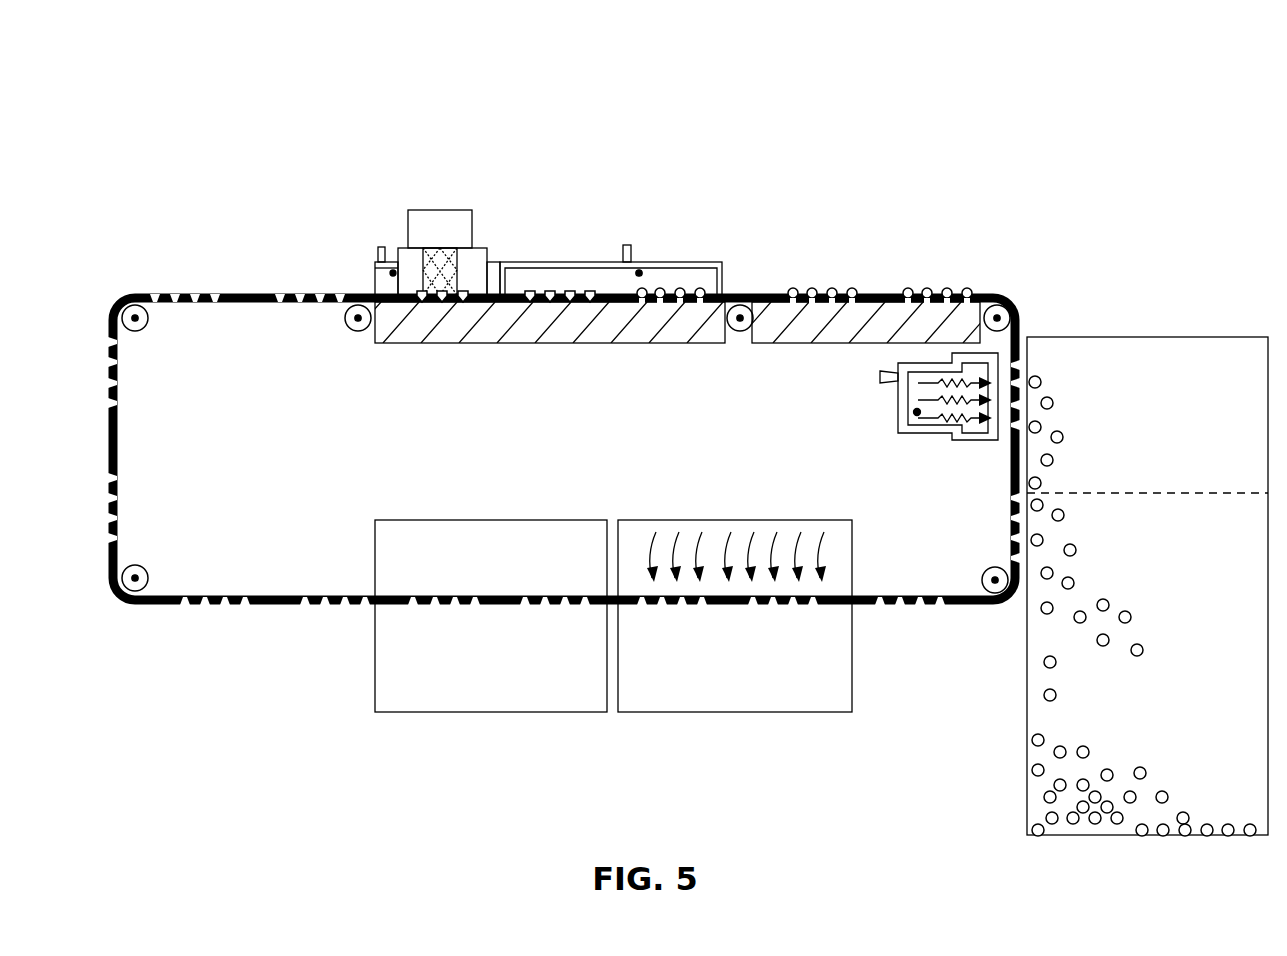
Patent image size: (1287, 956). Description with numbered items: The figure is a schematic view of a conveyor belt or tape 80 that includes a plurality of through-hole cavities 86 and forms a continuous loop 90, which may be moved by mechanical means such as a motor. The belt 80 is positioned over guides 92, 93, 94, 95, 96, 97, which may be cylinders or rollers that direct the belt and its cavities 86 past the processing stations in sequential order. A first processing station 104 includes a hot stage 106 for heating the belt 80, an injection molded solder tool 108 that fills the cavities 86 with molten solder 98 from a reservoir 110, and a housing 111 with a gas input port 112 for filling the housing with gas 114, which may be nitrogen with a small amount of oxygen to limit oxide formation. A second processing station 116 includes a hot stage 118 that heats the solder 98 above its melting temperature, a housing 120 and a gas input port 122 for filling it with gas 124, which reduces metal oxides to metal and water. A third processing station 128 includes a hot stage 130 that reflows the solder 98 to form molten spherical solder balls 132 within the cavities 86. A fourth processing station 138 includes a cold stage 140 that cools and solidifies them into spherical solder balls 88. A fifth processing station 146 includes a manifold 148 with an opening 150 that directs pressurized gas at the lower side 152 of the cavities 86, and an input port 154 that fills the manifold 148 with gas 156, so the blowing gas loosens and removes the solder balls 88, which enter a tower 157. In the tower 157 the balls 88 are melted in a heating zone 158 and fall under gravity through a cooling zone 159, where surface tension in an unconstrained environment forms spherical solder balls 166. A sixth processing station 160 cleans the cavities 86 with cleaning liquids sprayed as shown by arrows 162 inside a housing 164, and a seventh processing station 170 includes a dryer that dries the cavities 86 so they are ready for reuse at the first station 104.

The conveyor belt or tape 80 is at (240, 293).
The through-hole cavities 86 is at (215, 293).
The spherical solder balls 88 is at (793, 290).
The continuous loop 90 is at (166, 207).
The guide 92 is at (130, 332).
The guide 93 is at (350, 330).
The guide 94 is at (738, 333).
The guide 95 is at (997, 305).
The guide 96 is at (988, 580).
The guide 97 is at (140, 565).
The molten solder 98 is at (590, 292).
The first processing station 104 is at (395, 113).
The hot stage 106 is at (415, 345).
The injection molded solder tool 108 is at (462, 210).
The reservoir 110 is at (443, 210).
The housing 111 is at (384, 247).
The gas input port 112 is at (396, 262).
The gas 114 is at (376, 268).
The second processing station 116 is at (523, 113).
The hot stage 118 is at (555, 345).
The housing 120 is at (608, 262).
The gas input port 122 is at (627, 245).
The gas 124 is at (642, 268).
The third processing station 128 is at (643, 113).
The hot stage 130 is at (675, 345).
The molten spherical solder balls 132 is at (642, 290).
The fourth processing station 138 is at (835, 113).
The cold stage 140 is at (820, 345).
The fifth processing station 146 is at (1044, 349).
The manifold 148 is at (930, 437).
The opening 150 is at (993, 427).
The lower side 152 is at (1008, 400).
The input port 154 is at (880, 378).
The gas 156 is at (915, 413).
The tower 157 is at (1178, 337).
The heating zone 158 is at (1190, 378).
The cooling zone 159 is at (1190, 578).
The sixth processing station 160 is at (650, 724).
The arrows 162 is at (797, 532).
The housing 164 is at (852, 560).
The spherical solder balls 166 is at (1071, 580).
The seventh processing station 170 is at (452, 724).